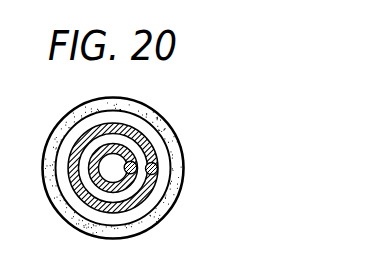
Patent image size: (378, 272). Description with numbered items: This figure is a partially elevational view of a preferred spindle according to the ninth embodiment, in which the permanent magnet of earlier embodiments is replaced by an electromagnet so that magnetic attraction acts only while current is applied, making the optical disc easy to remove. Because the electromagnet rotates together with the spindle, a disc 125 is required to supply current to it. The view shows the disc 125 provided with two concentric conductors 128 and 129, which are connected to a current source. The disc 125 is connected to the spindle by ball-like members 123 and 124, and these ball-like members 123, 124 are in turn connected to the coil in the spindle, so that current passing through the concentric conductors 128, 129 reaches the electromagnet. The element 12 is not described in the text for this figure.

The housing 12 is at (50, 183).
The disc 125 is at (66, 148).
The concentric conductor 128 is at (146, 139).
The concentric conductor 129 is at (123, 145).
The ball-like member 124 is at (136, 172).
The ball-like member 123 is at (158, 171).